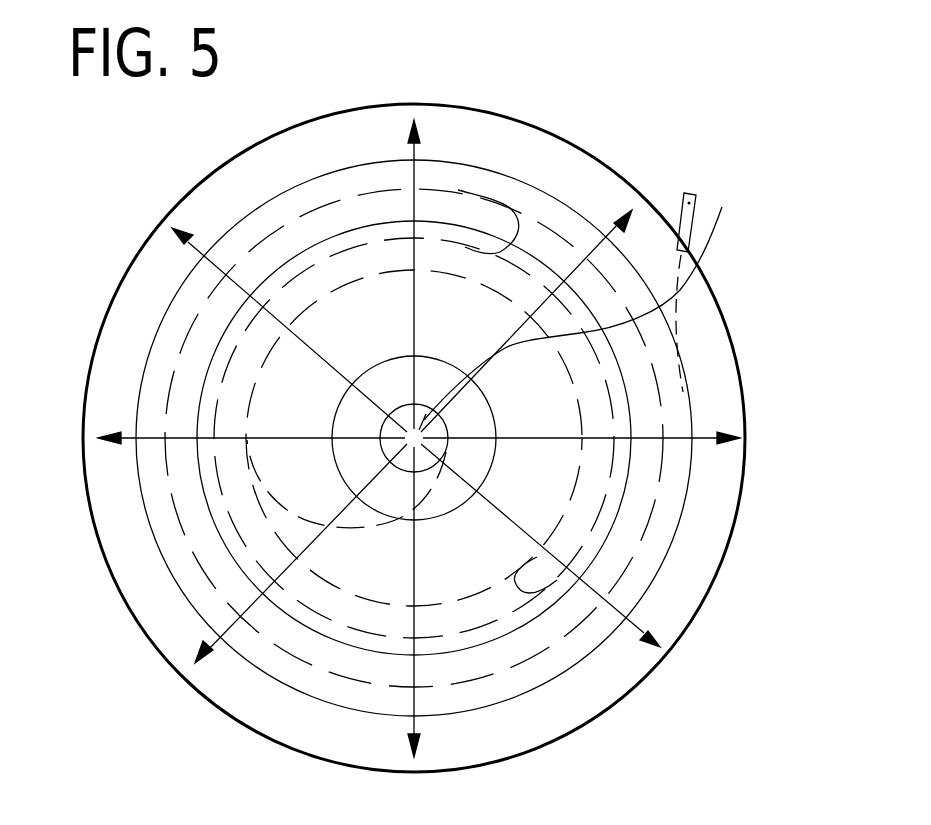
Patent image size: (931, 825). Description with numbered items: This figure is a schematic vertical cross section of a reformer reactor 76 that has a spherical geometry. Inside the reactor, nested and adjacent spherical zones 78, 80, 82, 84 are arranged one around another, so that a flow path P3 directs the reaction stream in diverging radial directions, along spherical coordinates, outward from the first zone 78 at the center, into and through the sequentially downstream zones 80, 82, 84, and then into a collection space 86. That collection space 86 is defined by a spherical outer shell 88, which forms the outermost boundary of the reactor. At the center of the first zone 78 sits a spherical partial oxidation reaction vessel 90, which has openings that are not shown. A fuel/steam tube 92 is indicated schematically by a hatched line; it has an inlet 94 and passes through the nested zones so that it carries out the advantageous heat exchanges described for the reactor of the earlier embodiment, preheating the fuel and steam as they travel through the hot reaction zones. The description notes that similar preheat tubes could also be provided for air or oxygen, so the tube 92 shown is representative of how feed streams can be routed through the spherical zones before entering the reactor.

The reformer reactor 76 is at (610, 142).
The first zone 78 is at (483, 428).
The spherical zone 80 is at (528, 486).
The spherical zone 82 is at (583, 380).
The spherical zone 84 is at (645, 388).
The collection space 86 is at (723, 472).
The spherical outer shell 88 is at (745, 497).
The spherical partial oxidation reaction vessel 90 is at (426, 414).
The fuel/steam tube 92 is at (643, 540).
The inlet 94 is at (688, 194).
The flow path P3 is at (588, 296).